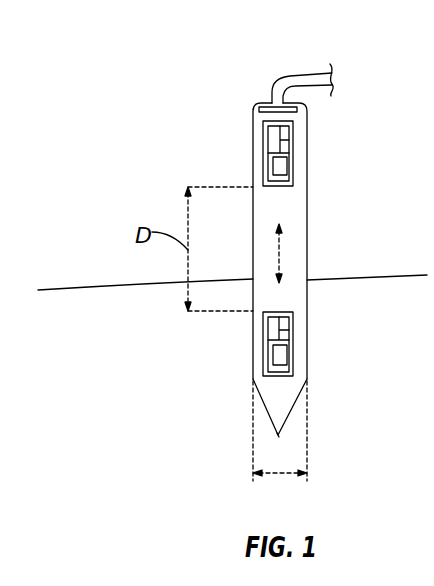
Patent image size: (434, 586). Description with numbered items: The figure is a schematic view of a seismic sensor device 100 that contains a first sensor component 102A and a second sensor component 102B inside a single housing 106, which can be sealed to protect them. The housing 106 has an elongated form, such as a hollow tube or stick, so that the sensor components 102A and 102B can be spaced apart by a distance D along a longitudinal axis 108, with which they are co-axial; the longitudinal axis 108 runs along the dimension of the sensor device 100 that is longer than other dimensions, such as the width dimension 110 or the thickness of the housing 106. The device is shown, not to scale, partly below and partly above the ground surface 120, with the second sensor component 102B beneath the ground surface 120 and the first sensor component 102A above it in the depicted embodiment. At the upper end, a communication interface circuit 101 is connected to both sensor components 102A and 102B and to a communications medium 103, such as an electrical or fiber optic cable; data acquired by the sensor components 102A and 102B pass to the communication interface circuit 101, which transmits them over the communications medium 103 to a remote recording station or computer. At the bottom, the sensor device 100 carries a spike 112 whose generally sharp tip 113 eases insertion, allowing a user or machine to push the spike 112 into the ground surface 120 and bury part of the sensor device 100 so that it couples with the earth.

The seismic sensor device 100 is at (286, 280).
The communication interface circuit 101 is at (253, 108).
The first sensor component 102A is at (263, 148).
The second sensor component 102B is at (263, 354).
The communications medium 103 is at (291, 76).
The housing 106 is at (253, 252).
The longitudinal axis 108 is at (283, 251).
The width dimension 110 is at (278, 475).
The spike 112 is at (263, 407).
The sharp tip 113 is at (279, 437).
The ground surface 120 is at (93, 286).